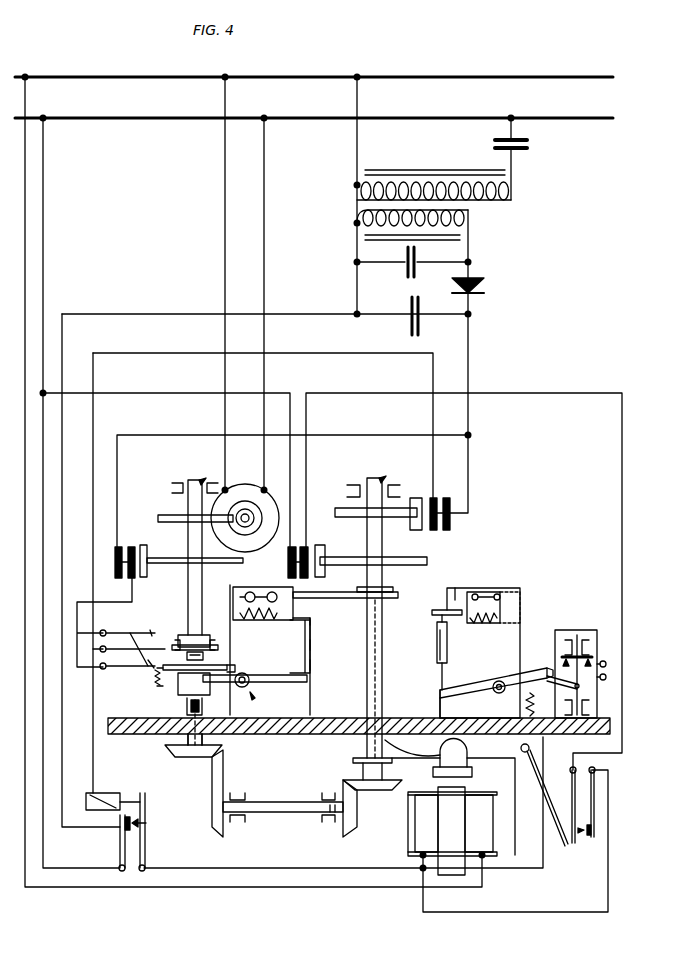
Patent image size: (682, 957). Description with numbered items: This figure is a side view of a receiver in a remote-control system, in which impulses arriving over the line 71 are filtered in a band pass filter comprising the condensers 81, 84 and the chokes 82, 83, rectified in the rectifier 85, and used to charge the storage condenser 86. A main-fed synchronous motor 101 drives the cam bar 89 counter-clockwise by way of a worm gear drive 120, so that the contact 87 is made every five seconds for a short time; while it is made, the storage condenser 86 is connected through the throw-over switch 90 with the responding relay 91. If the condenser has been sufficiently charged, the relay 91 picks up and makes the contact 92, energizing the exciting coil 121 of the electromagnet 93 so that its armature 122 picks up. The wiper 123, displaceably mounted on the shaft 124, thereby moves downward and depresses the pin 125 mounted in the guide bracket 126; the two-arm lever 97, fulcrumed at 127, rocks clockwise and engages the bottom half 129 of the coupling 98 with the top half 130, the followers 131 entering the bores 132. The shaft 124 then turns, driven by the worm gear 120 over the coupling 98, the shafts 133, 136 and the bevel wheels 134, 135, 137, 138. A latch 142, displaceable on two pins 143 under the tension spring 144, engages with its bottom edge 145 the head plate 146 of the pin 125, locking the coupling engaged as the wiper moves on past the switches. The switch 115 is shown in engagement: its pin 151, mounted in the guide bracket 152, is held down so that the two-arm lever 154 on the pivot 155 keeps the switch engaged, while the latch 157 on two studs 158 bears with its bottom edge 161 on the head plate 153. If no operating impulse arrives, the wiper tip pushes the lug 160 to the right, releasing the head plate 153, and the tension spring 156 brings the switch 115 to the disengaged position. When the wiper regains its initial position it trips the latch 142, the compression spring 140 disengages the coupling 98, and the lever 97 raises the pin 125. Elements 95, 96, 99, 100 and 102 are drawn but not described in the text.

The line 71 is at (375, 118).
The condenser 81 is at (527, 145).
The choke 82 is at (512, 192).
The choke 83 is at (468, 218).
The condenser 84 is at (416, 256).
The rectifier 85 is at (484, 287).
The storage condenser 86 is at (420, 306).
The contact 87 is at (128, 546).
The cam bar 89 is at (165, 558).
The throw-over switch 90 is at (135, 633).
The responding relay 91 is at (113, 795).
The contact 92 is at (146, 830).
The electromagnet 93 is at (452, 831).
The switch 95 is at (580, 836).
The clutch 96 is at (302, 546).
The two-arm lever 97 is at (304, 690).
The coupling 98 is at (228, 645).
The shaft 99 is at (340, 508).
The shaft 100 is at (349, 551).
The synchronous motor 101 is at (236, 488).
The clutch 102 is at (437, 531).
The switch 115 is at (573, 630).
The worm gear drive 120 is at (162, 515).
The exciting coil 121 is at (415, 827).
The armature 122 is at (472, 775).
The wiper 123 is at (398, 593).
The shaft 124 is at (384, 543).
The pin 125 is at (310, 645).
The guide bracket 126 is at (310, 665).
The fulcrum 127 is at (258, 695).
The bottom half of coupling 129 is at (155, 673).
The top half of coupling 130 is at (175, 635).
The followers 131 is at (180, 675).
The bores 132 is at (208, 638).
The shaft 133 is at (210, 742).
The bevel wheel 134 is at (172, 750).
The bevel wheel 135 is at (212, 788).
The shaft 136 is at (284, 802).
The bevel wheel 137 is at (350, 827).
The bevel wheel 138 is at (384, 790).
The compression spring 140 is at (205, 680).
The latch 142 is at (285, 587).
The pins 143 is at (270, 592).
The tension spring 144 is at (260, 622).
The bottom edge 145 is at (300, 592).
The head plate 146 is at (318, 625).
The pin 151 is at (447, 648).
The guide bracket 152 is at (437, 635).
The head plate 153 is at (432, 610).
The two-arm lever 154 is at (472, 688).
The pivot 155 is at (490, 692).
The tension spring 156 is at (528, 700).
The latch 157 is at (500, 590).
The studs 158 is at (500, 595).
The lug 160 is at (460, 588).
The bottom edge 161 is at (445, 600).